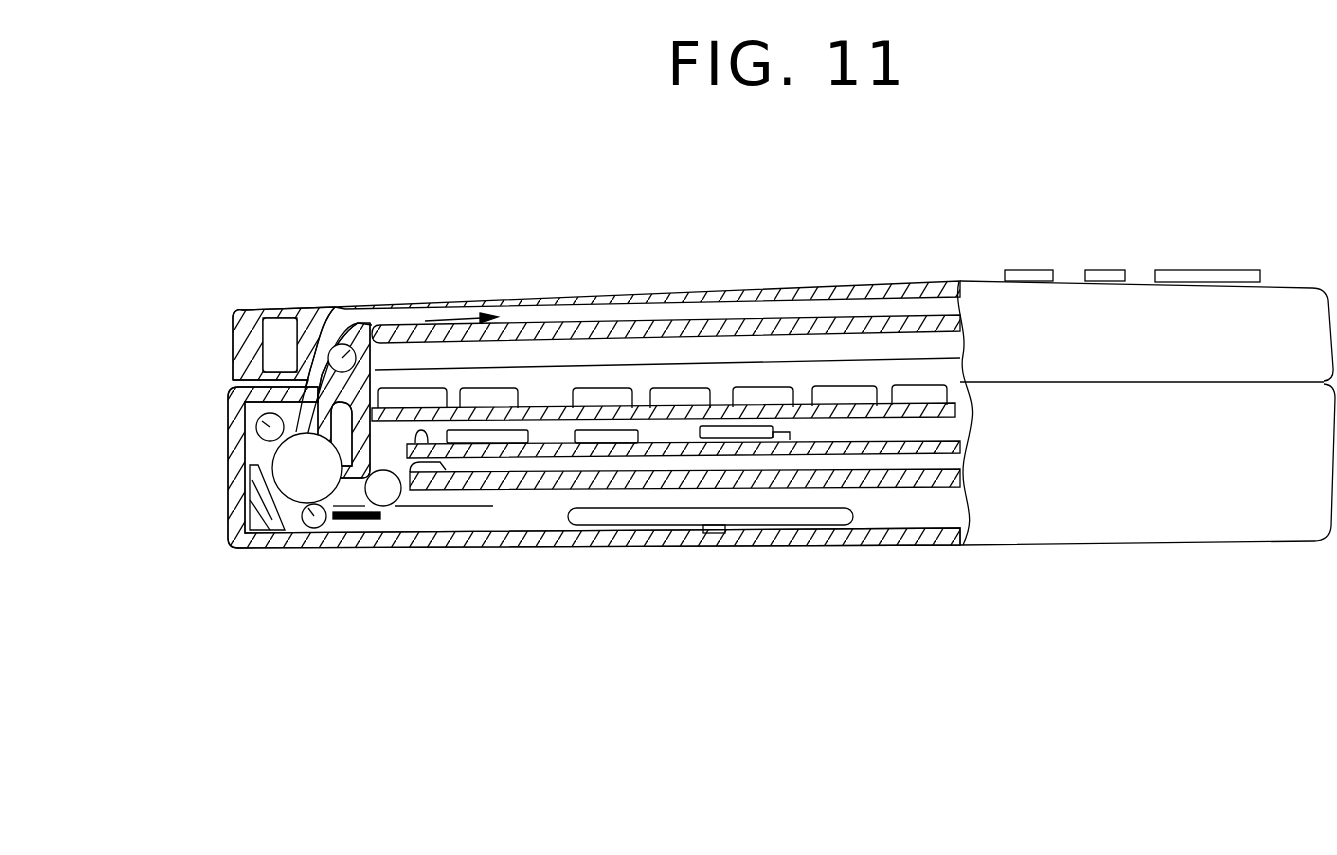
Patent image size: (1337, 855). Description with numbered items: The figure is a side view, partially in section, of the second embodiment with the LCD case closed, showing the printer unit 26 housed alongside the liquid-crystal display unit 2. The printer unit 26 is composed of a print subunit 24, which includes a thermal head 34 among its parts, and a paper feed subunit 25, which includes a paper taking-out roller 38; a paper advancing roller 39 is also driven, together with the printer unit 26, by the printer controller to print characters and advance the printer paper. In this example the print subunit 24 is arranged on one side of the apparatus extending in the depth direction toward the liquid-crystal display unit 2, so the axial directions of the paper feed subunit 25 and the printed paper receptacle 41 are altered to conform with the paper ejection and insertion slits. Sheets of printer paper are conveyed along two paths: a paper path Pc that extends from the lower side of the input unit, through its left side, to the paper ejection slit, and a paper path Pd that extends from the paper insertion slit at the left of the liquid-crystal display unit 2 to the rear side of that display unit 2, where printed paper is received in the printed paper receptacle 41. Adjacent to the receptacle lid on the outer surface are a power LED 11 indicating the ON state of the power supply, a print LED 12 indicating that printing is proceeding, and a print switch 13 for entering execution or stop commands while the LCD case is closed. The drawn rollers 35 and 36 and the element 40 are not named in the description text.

The liquid-crystal display unit 2 is at (785, 345).
The power LED 11 is at (1030, 274).
The print LED 12 is at (1112, 274).
The print switch 13 is at (1207, 276).
The print subunit 24 is at (245, 450).
The paper feed subunit 25 is at (353, 550).
The printer unit 26 is at (236, 560).
The thermal head 34 is at (232, 515).
The pinch roller 35 is at (313, 530).
The pinch roller 36 is at (243, 417).
The paper taking-out roller 38 is at (385, 508).
The paper advancing roller 39 is at (346, 342).
The paper discharge slot 40 is at (553, 512).
The printed paper receptacle 41 is at (733, 318).
The paper path Pd is at (440, 312).
The paper path Pc is at (437, 506).